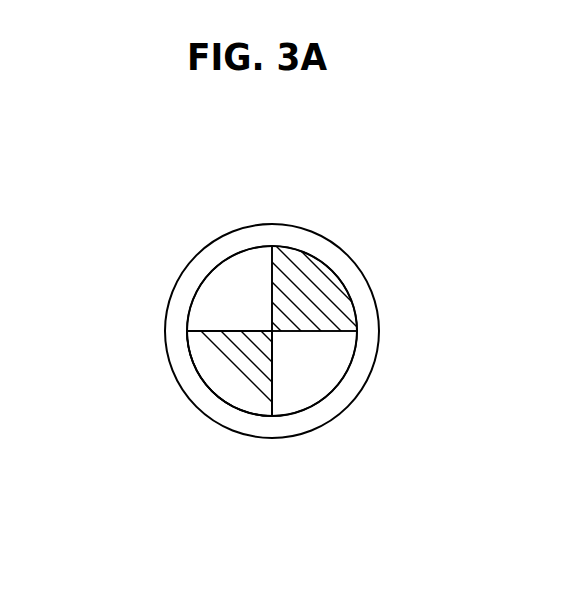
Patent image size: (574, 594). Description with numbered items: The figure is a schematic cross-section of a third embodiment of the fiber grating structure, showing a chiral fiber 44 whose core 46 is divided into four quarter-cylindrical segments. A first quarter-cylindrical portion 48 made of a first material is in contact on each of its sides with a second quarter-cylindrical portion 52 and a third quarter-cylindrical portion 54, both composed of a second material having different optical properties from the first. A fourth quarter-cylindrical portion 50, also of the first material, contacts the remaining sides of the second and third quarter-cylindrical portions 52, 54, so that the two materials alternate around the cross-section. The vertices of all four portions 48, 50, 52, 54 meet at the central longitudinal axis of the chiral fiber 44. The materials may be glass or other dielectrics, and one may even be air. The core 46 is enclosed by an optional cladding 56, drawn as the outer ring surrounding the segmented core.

The chiral fiber 44 is at (165, 205).
The core 46 is at (327, 395).
The first quarter-cylindrical portion 48 is at (308, 368).
The fourth quarter-cylindrical portion 50 is at (229, 298).
The second quarter-cylindrical portion 52 is at (303, 297).
The third quarter-cylindrical portion 54 is at (223, 370).
The cladding 56 is at (212, 406).